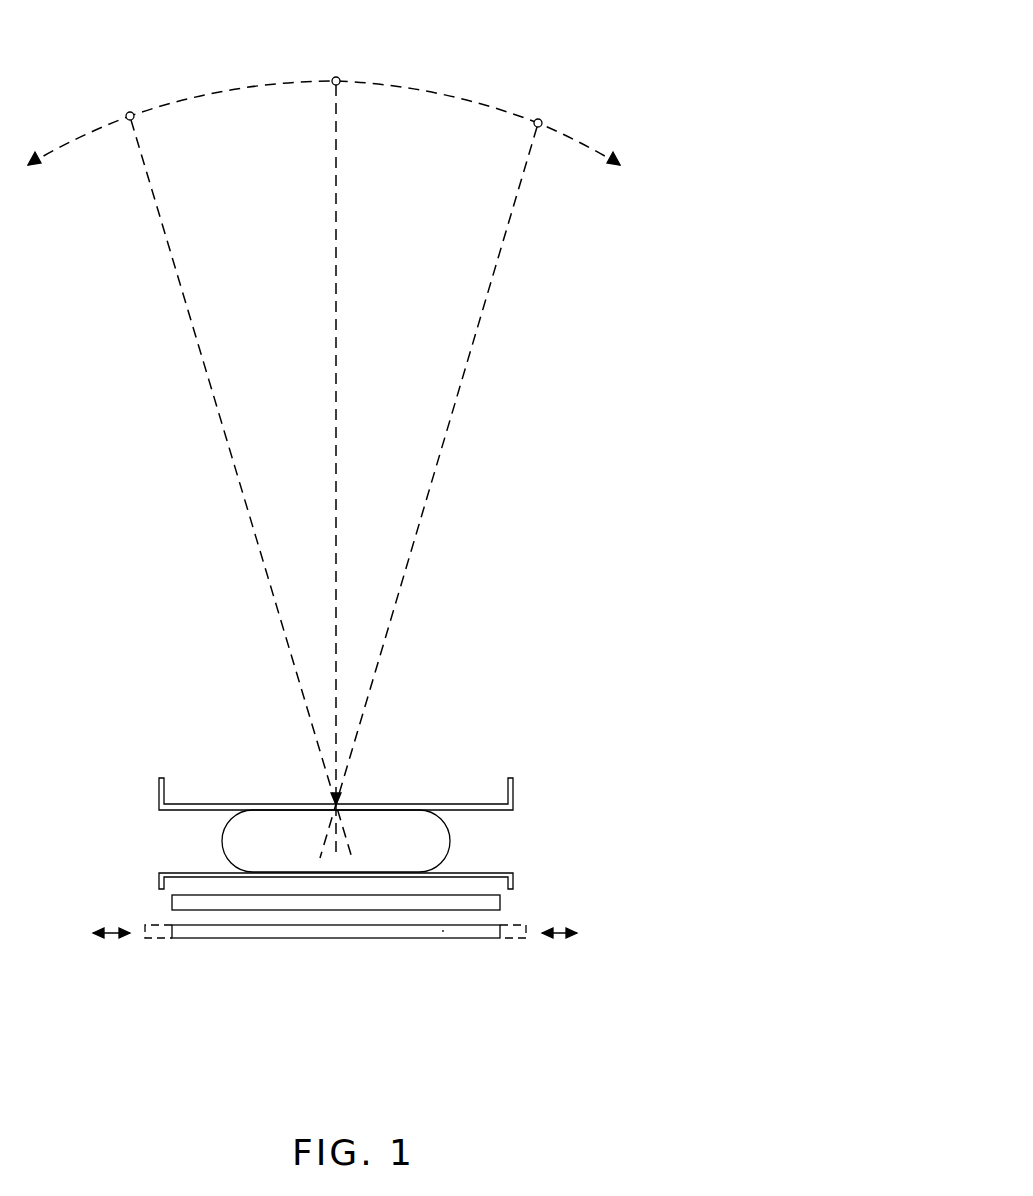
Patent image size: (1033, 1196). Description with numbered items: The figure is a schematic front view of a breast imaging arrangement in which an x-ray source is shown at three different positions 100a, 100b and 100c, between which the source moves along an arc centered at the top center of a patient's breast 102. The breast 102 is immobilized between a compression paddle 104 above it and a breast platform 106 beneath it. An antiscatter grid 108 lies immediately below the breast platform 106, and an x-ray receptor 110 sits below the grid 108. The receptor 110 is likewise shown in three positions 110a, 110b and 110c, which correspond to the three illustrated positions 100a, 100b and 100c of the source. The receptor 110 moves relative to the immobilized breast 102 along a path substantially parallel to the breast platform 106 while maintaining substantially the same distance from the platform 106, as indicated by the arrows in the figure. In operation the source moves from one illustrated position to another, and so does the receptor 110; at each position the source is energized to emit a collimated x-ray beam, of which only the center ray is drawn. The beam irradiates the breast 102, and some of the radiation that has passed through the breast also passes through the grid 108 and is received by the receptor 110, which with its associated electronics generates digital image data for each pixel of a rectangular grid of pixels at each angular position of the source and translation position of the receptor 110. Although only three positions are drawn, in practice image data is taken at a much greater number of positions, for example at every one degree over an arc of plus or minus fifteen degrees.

The x-ray source position 100a is at (336, 77).
The x-ray source position 100b is at (130, 112).
The x-ray source position 100c is at (538, 119).
The breast 102 is at (443, 848).
The compression paddle 104 is at (517, 793).
The breast platform 106 is at (513, 873).
The antiscatter grid 108 is at (512, 903).
The x-ray receptor 110 is at (328, 945).
The receptor position 110a is at (443, 930).
The receptor position 110b is at (518, 943).
The receptor position 110c is at (162, 945).